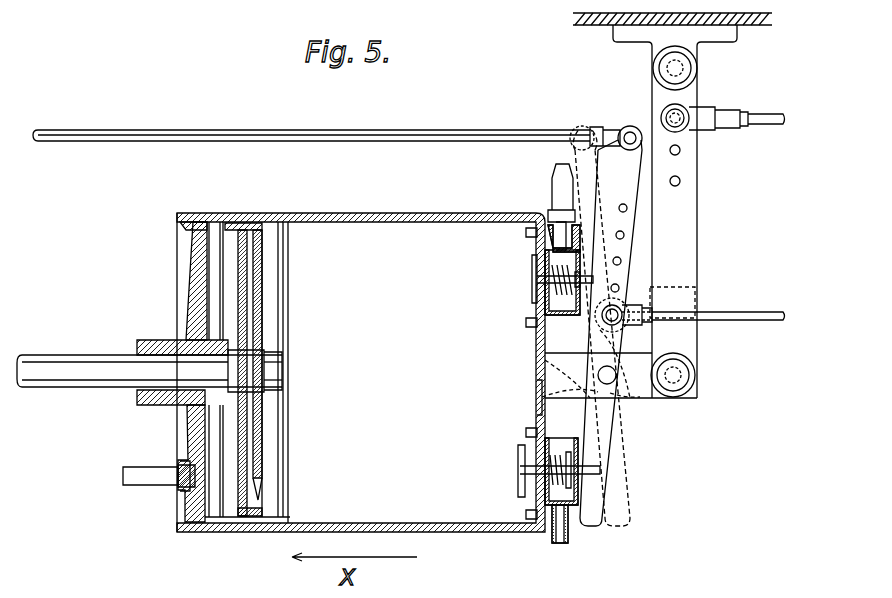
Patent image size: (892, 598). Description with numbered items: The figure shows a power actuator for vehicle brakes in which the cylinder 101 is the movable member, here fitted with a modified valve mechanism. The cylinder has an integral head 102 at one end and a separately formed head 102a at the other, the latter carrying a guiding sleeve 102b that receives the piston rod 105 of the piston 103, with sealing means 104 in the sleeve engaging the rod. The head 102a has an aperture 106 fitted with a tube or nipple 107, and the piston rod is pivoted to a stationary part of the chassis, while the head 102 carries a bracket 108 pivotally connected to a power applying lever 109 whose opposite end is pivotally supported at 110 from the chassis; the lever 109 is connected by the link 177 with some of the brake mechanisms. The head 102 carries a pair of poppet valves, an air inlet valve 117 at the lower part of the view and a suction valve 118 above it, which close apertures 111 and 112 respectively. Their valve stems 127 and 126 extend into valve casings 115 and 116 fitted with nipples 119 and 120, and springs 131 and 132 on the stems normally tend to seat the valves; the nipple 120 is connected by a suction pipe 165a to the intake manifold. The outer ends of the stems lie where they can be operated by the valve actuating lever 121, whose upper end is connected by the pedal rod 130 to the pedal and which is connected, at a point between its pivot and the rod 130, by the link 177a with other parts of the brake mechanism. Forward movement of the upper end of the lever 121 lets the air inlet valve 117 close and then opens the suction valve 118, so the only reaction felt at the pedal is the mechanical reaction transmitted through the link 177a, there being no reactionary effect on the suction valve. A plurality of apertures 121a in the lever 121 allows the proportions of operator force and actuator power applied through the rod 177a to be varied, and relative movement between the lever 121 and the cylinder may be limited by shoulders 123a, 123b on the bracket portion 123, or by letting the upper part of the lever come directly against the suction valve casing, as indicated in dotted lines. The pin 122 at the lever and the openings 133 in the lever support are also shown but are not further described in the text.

The cylinder 101 is at (388, 213).
The cylinder head 102 is at (531, 329).
The separately formed head 102a is at (193, 285).
The guiding sleeve 102b is at (155, 344).
The piston 103 is at (283, 445).
The sealing means 104 is at (186, 410).
The piston rod 105 is at (50, 362).
The aperture 106 is at (197, 482).
The tube or nipple 107 is at (140, 468).
The bracket 108 is at (660, 397).
The power applying lever 109 is at (690, 221).
The pivot 110 is at (678, 68).
The aperture 111 is at (534, 436).
The aperture 112 is at (533, 262).
The valve casing 115 is at (580, 450).
The valve casing 116 is at (578, 312).
The air inlet valve 117 is at (518, 462).
The suction valve 118 is at (537, 280).
The nipple 119 is at (569, 535).
The nipple 120 is at (552, 212).
The valve actuating lever 121 is at (622, 170).
The apertures 121a is at (624, 235).
The pin 122 is at (608, 373).
The link 123 is at (599, 364).
The shoulder 123a is at (636, 408).
The shoulder 123b is at (538, 393).
The valve stem 126 is at (590, 281).
The valve stem 127 is at (590, 472).
The pedal rod 130 is at (293, 130).
The spring 131 is at (560, 458).
The spring 132 is at (556, 262).
The holes 133 is at (679, 178).
The suction pipe 165a is at (558, 175).
The link 177 is at (752, 117).
The link 177a is at (733, 316).